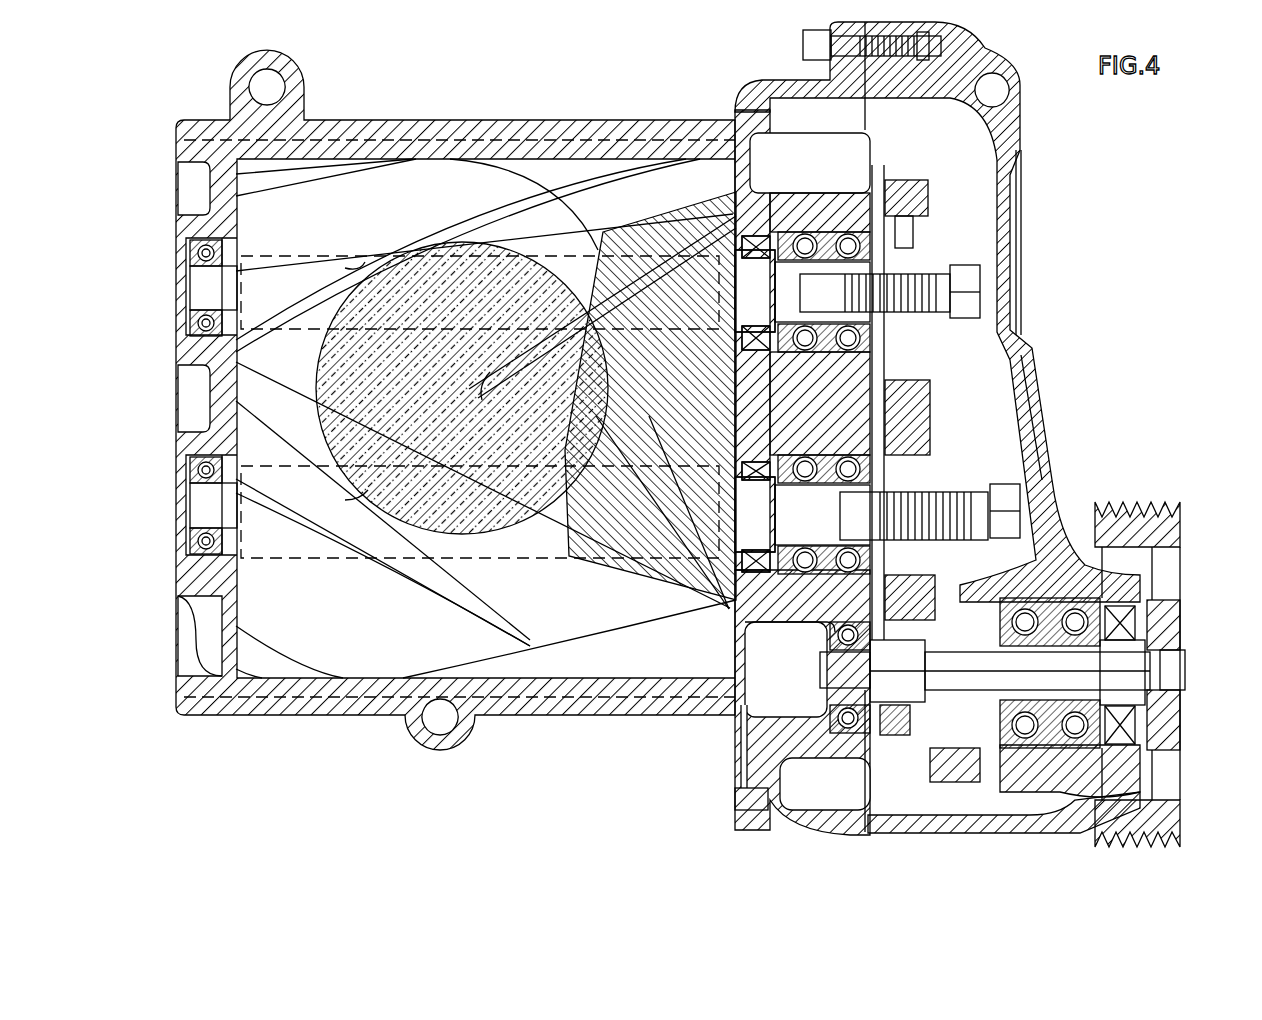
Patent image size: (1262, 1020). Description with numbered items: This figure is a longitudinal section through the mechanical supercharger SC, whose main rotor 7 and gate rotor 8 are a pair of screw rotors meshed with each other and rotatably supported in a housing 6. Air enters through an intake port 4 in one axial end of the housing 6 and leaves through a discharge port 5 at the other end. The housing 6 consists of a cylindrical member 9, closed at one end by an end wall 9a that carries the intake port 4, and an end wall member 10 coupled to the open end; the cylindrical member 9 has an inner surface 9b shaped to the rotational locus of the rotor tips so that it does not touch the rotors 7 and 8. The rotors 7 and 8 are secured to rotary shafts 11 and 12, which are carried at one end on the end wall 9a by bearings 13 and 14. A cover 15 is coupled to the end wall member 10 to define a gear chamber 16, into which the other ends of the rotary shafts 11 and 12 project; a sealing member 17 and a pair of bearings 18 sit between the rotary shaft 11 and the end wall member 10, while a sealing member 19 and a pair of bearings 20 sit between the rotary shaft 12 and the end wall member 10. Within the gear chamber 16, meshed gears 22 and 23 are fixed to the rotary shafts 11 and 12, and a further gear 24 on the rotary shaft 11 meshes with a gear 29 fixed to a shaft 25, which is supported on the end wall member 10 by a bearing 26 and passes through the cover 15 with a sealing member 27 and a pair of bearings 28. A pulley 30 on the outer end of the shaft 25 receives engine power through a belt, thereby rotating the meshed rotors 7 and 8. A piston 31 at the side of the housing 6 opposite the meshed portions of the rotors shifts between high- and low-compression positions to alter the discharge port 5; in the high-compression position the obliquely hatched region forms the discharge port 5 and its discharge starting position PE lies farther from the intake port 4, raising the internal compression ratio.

The intake port 4 is at (190, 633).
The discharge port 5 is at (628, 275).
The housing 6 is at (662, 760).
The main rotor 7 is at (462, 600).
The gate rotor 8 is at (478, 208).
The cylindrical member 9 is at (606, 698).
The end wall 9a is at (205, 395).
The inner surface 9b is at (531, 676).
The end wall member 10 is at (735, 708).
The rotary shaft 11 is at (556, 560).
The rotary shaft 12 is at (298, 252).
The bearing 13 is at (190, 548).
The bearing 14 is at (190, 252).
The cover 15 is at (1040, 398).
The gear chamber 16 is at (1003, 216).
The sealing member 17 is at (735, 606).
The bearings 18 is at (810, 592).
The sealing member 19 is at (760, 236).
The bearings 20 is at (833, 250).
The gear 22 is at (905, 445).
The gear 23 is at (916, 194).
The gear 24 is at (978, 492).
The shaft 25 is at (820, 666).
The bearing 26 is at (860, 702).
The sealing member 27 is at (1128, 740).
The bearings 28 is at (1078, 600).
The gear 29 is at (930, 760).
The pulley 30 is at (1180, 522).
The piston 31 is at (494, 252).
The mechanical supercharger SC is at (1040, 279).
The discharge starting position PE is at (402, 391).